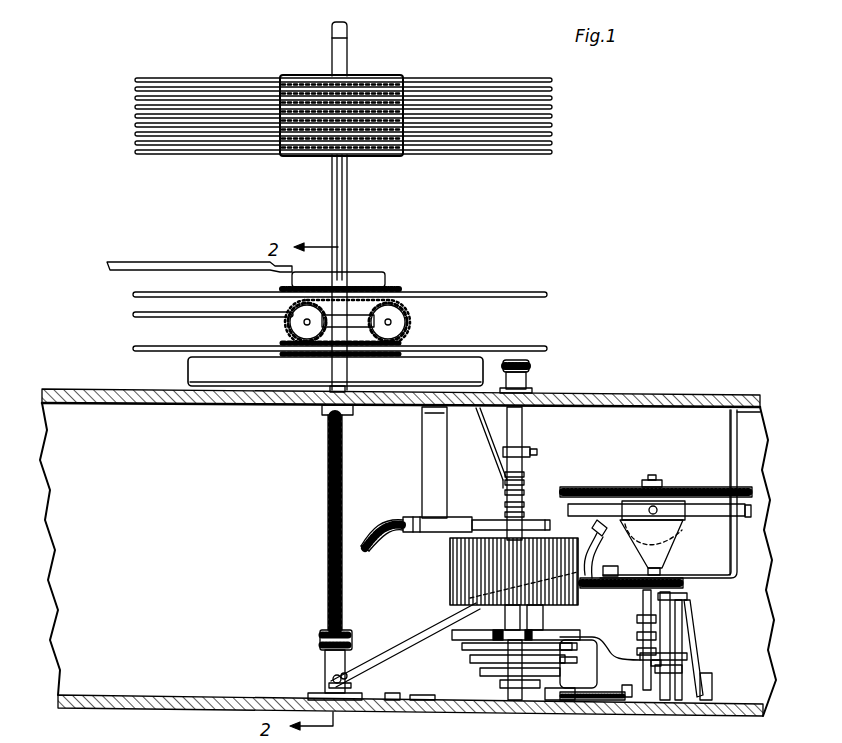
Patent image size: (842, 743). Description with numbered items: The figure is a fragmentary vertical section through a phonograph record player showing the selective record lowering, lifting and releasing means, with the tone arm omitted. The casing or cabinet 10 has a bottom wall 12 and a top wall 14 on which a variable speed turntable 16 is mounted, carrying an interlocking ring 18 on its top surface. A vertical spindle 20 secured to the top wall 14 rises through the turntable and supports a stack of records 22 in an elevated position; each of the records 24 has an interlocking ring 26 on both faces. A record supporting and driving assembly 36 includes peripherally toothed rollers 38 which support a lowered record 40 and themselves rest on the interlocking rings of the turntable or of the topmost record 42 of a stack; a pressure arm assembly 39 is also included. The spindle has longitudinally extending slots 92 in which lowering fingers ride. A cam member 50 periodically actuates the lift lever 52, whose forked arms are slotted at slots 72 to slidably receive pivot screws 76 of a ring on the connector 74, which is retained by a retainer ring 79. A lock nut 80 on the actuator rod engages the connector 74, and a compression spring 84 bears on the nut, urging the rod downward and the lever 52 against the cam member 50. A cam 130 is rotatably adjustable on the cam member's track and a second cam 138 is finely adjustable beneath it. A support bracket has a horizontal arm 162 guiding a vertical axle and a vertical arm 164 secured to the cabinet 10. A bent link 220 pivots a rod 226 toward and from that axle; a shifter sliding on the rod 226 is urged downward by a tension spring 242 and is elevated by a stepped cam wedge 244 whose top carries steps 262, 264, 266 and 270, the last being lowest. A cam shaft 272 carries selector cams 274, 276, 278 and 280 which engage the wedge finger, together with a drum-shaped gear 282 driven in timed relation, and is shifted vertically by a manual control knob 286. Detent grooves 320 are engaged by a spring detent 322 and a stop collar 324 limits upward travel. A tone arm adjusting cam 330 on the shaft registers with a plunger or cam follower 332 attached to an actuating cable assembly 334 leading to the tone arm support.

The casing or cabinet 10 is at (88, 625).
The bottom wall 12 is at (75, 695).
The top wall 14 is at (128, 394).
The variable speed turntable 16 is at (200, 368).
The interlocking ring 18 is at (362, 356).
The vertical spindle 20 is at (343, 58).
The stack of records 22 is at (518, 76).
The records 24 is at (552, 146).
The interlocking ring 26 is at (392, 289).
The record supporting and driving assembly 36 is at (128, 312).
The peripherally toothed rollers 38 is at (300, 326).
The pressure arm assembly 39 is at (143, 262).
The record 40 is at (511, 292).
The topmost record 42 is at (531, 346).
The cam member 50 is at (613, 487).
The lift lever 52 is at (377, 655).
The slots 72 is at (348, 675).
The connector 74 is at (335, 660).
The pivot screws 76 is at (333, 676).
The retainer ring 79 is at (351, 684).
The lock nut 80 is at (320, 635).
The compression spring 84 is at (343, 518).
The longitudinally extending slots 92 is at (348, 223).
The cam 130 is at (660, 551).
The second cam 138 is at (667, 528).
The horizontal arm 162 is at (708, 577).
The vertical arm 164 is at (730, 425).
The bent link 220 is at (687, 613).
The rod 226 is at (656, 598).
The tension spring 242 is at (670, 688).
The stepped cam wedge 244 is at (607, 647).
The cam surface or step 262 is at (560, 634).
The cam surface or step 264 is at (606, 645).
The cam surface or step 266 is at (650, 661).
The cam surface or step 270 is at (700, 682).
The cam shaft 272 is at (524, 434).
The selector cam 274 is at (457, 630).
The selector cam 276 is at (460, 647).
The selector cam 278 is at (497, 660).
The selector cam 280 is at (510, 673).
The drum-shaped gear 282 is at (478, 560).
The manual control knob 286 is at (530, 371).
The detent grooves 320 is at (524, 493).
The spring detent 322 is at (490, 448).
The stop collar 324 is at (533, 452).
The tone arm adjusting cam 330 is at (508, 523).
The plunger or cam follower 332 is at (462, 535).
The actuating cable assembly 334 is at (374, 548).